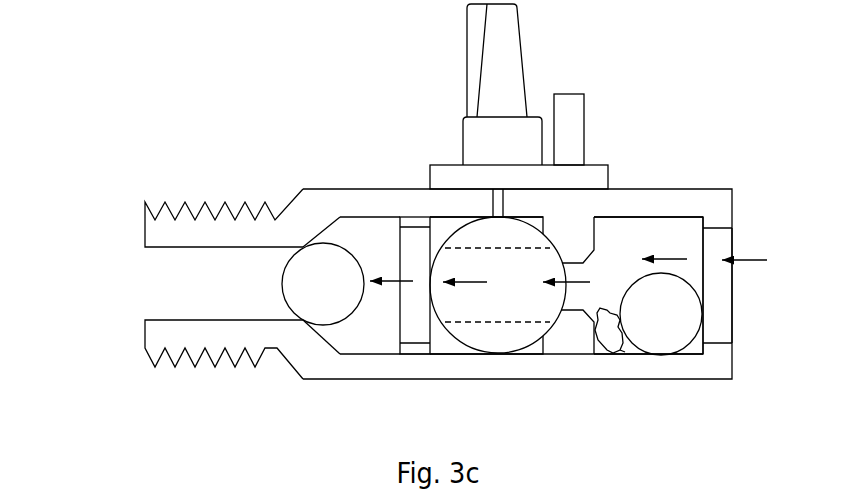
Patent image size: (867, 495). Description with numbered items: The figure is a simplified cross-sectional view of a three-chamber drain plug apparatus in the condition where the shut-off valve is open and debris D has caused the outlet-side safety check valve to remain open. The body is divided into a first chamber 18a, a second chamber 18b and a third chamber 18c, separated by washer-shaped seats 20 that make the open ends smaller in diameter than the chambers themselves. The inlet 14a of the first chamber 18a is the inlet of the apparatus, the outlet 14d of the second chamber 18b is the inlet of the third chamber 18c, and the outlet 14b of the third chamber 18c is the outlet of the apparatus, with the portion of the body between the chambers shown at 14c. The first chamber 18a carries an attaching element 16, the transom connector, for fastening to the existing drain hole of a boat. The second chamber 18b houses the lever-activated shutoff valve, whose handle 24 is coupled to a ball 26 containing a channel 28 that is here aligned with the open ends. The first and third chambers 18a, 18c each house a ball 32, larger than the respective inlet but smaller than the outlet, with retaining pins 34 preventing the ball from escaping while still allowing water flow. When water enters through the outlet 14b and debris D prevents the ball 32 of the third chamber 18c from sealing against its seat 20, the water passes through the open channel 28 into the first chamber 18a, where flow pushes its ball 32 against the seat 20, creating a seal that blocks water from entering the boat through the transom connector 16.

The attaching element 16 is at (223, 200).
The inlet 14a is at (142, 285).
The outlet 14b is at (732, 343).
The body wall portion 14c is at (432, 337).
The outlet of the second chamber 14d is at (595, 278).
The first chamber 18a is at (378, 343).
The second chamber 18b is at (537, 337).
The third chamber 18c is at (600, 347).
The seats 20 is at (412, 243).
The handle 24 is at (522, 70).
The ball 26 is at (543, 218).
The channel 28 is at (493, 258).
The ball 32 is at (327, 312).
The retaining pins 34 is at (412, 217).
The debris D is at (620, 350).